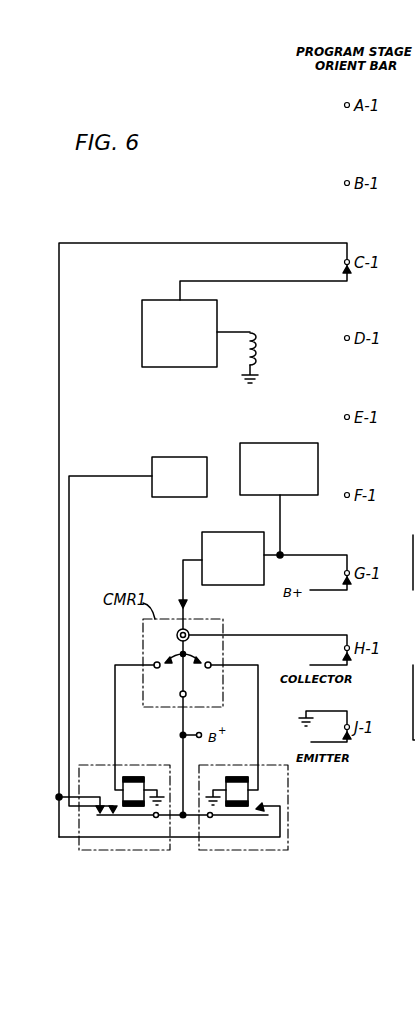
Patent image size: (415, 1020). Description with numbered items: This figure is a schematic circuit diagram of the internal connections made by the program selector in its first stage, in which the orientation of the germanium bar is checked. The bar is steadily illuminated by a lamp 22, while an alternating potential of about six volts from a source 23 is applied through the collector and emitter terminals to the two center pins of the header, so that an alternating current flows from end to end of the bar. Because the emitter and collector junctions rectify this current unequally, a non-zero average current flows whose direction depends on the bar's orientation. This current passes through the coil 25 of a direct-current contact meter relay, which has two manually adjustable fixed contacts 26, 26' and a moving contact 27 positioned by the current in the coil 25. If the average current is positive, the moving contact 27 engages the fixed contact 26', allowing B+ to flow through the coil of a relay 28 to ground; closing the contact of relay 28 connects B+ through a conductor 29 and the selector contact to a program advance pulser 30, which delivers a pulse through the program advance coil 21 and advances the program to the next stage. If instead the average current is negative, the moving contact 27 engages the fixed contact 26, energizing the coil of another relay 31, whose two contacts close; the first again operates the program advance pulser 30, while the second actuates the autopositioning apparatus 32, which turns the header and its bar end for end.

The conductor 29 is at (92, 243).
The program advance pulser 30 is at (217, 310).
The program advance coil 21 is at (257, 351).
The autopositioning apparatus 32 is at (178, 457).
The lamp 22 is at (265, 443).
The source 23 is at (212, 532).
The coil 25 is at (189, 629).
The fixed contact 26 is at (133, 714).
The fixed contact 26' is at (231, 716).
The moving contact 27 is at (178, 662).
The relay 31 is at (130, 765).
The relay 28 is at (288, 782).